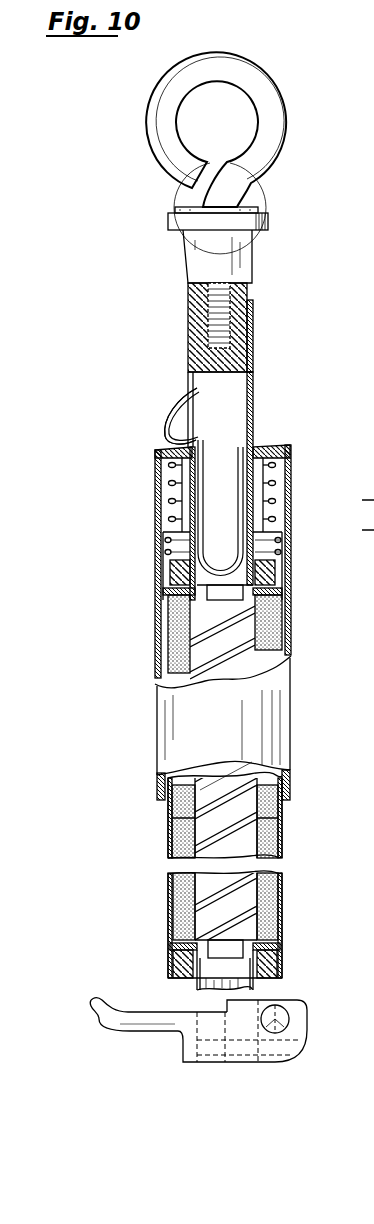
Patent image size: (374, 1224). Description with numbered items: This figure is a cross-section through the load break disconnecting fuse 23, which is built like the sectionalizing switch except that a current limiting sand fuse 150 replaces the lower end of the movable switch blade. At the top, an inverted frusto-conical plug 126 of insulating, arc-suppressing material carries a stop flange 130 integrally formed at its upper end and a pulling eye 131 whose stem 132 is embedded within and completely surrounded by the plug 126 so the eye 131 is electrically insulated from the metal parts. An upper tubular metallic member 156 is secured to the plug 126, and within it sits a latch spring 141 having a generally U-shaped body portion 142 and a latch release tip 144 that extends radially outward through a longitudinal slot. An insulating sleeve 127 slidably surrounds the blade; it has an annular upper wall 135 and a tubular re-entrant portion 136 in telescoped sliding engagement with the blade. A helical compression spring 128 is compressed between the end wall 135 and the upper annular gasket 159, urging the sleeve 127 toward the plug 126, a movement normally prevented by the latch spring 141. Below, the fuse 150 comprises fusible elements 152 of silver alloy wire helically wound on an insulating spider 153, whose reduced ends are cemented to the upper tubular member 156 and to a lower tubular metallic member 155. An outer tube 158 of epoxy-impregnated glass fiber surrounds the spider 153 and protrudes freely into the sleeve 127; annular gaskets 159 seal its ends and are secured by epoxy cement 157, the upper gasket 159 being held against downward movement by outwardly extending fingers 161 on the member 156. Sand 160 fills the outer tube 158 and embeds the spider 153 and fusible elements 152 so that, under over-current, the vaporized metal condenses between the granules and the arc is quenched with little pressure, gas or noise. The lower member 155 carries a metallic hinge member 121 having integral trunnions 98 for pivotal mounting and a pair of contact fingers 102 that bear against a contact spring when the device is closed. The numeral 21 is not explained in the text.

The pulling eye 131 is at (160, 115).
The stop flange 130 is at (185, 219).
The inverted frusto-conical plug 126 is at (200, 252).
The stem 132 is at (250, 305).
The upper tubular metallic member 156 is at (253, 405).
The latch release tip 144 is at (165, 437).
The latch spring 141 is at (170, 394).
The U-shaped body portion 142 is at (240, 545).
The annular upper wall 135 is at (272, 447).
The helical compression spring 128 is at (172, 487).
The tubular re-entrant portion 136 is at (275, 500).
The epoxy cement 157 is at (170, 577).
The annular gaskets 159 is at (170, 598).
The outwardly extending fingers 161 is at (182, 610).
The outer tube 158 is at (282, 615).
The sleeve 127 is at (268, 730).
The disconnecting fuse 23 is at (108, 728).
The current limiting sand fuse 150 is at (165, 843).
The sand 160 is at (168, 822).
The fusible elements 152 is at (282, 838).
The spider 153 is at (212, 787).
The lower tubular metallic member 155 is at (197, 985).
The hinge member 121 is at (300, 1013).
The trunnions 98 is at (285, 1025).
The contact fingers 102 is at (96, 1012).
The device 21 is at (365, 208).